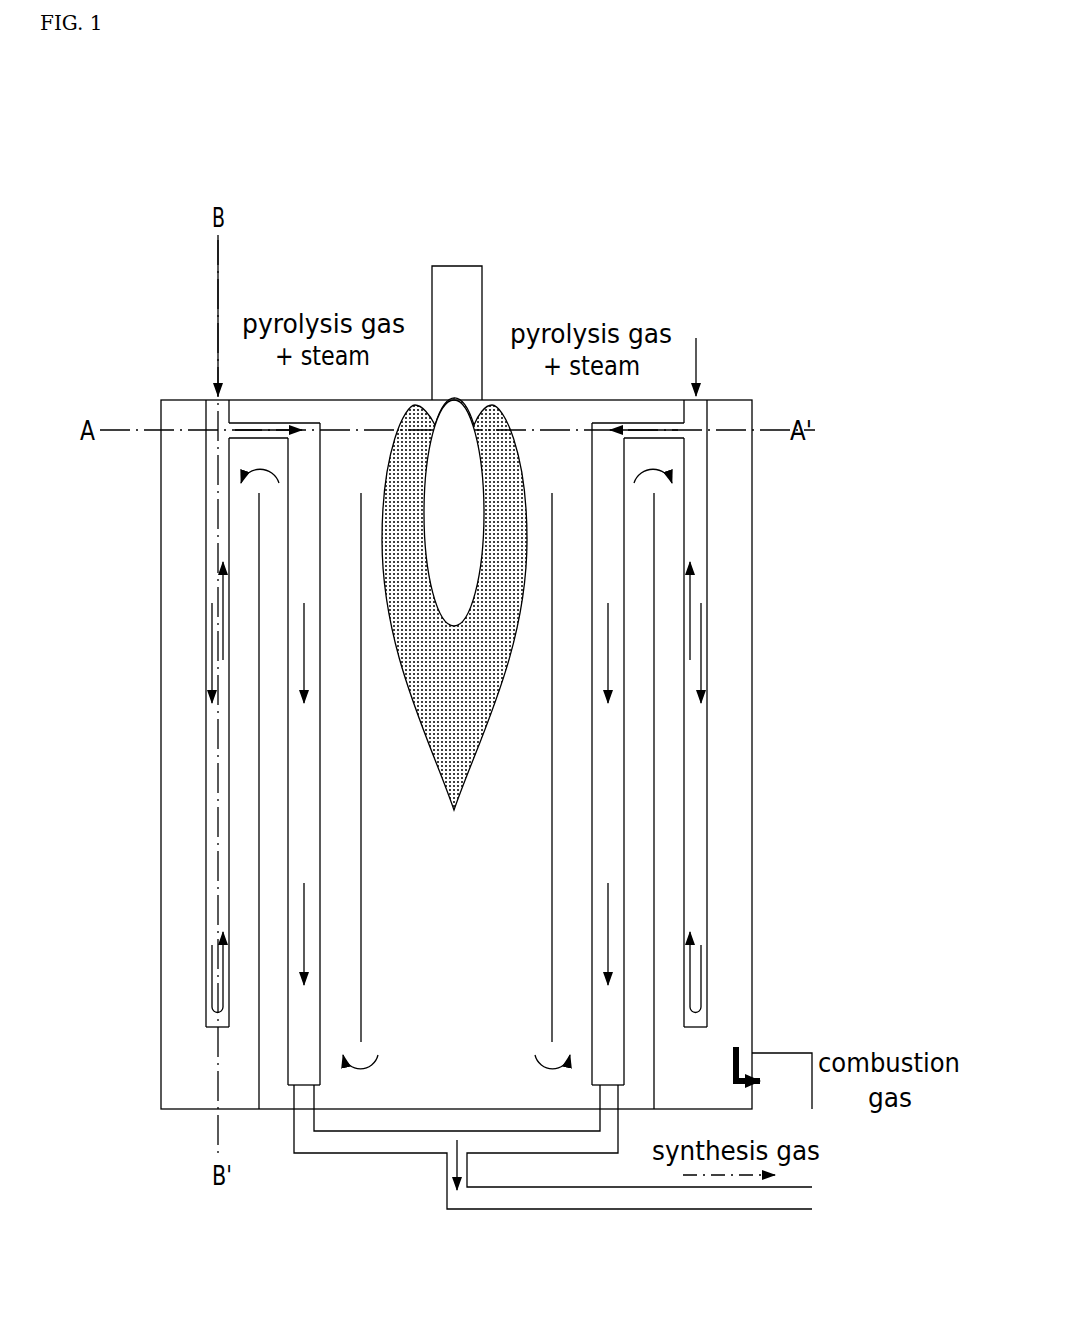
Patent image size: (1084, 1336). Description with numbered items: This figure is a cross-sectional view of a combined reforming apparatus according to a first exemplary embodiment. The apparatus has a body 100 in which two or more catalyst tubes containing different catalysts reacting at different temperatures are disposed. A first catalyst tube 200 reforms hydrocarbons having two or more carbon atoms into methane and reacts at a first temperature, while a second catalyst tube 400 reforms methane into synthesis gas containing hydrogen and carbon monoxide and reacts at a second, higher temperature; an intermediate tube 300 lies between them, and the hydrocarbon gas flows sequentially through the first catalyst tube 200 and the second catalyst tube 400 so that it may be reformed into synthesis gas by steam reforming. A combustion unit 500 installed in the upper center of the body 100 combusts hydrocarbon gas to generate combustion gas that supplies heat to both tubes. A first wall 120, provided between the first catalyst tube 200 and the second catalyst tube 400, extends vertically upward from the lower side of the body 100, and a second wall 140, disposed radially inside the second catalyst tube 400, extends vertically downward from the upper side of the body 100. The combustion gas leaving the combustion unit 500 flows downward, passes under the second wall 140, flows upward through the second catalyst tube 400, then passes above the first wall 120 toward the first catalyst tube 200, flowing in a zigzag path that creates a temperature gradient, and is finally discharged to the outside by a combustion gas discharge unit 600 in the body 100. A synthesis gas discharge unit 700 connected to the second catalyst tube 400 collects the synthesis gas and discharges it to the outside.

The body 100 is at (760, 597).
The first wall 120 is at (259, 856).
The second wall 140 is at (360, 654).
The first catalyst tube 200 is at (700, 733).
The intermediate tube 300 is at (236, 441).
The second catalyst tube 400 is at (286, 747).
The combustion unit 500 is at (428, 257).
The combustion gas discharge unit 600 is at (814, 1046).
The synthesis gas discharge unit 700 is at (435, 1198).